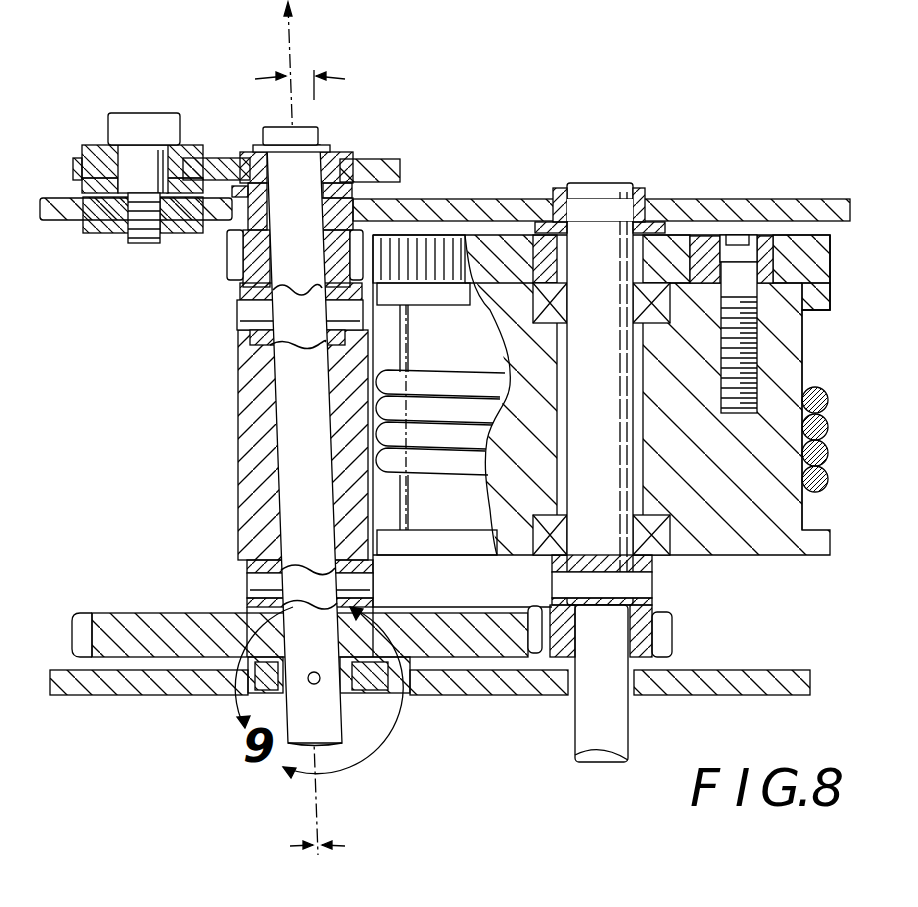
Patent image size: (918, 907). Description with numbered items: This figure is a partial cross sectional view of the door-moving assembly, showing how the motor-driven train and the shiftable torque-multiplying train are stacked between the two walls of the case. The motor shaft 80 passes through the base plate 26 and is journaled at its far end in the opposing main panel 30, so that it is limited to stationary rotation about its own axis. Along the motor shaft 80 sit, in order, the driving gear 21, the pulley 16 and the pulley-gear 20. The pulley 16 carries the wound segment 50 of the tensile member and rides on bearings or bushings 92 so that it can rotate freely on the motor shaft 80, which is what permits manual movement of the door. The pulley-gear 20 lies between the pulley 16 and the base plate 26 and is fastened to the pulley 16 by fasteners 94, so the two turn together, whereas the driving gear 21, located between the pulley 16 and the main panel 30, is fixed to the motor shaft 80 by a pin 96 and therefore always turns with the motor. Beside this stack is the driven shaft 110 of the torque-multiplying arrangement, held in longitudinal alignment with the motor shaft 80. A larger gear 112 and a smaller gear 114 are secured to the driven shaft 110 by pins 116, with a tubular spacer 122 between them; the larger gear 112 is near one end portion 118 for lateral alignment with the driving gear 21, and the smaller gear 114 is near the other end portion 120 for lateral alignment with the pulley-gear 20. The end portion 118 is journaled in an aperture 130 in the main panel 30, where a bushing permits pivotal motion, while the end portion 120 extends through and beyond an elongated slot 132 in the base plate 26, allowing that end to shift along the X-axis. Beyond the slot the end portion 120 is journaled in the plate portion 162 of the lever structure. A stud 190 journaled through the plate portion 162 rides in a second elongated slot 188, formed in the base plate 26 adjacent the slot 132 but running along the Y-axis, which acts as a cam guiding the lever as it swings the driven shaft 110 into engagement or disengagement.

The pulley 16 is at (806, 505).
The pulley-gear 20 is at (830, 243).
The driving gear 21 is at (672, 643).
The base plate 26 is at (742, 200).
The main panel 30 is at (748, 695).
The segment of the tensile member 50 is at (825, 394).
The motor shaft 80 is at (600, 183).
The bearings and/or bushings 92 is at (662, 557).
The fasteners 94 is at (755, 343).
The pin 96 is at (555, 581).
The driven shaft 110 is at (305, 126).
The larger gear 112 is at (76, 614).
The smaller gear 114 is at (233, 257).
The pins 116 is at (240, 302).
The end portion of the driven shaft 118 is at (285, 735).
The other end portion of the driven shaft 120 is at (282, 250).
The tubular spacer 122 is at (245, 430).
The aperture 130 is at (350, 607).
The elongated slot 132 is at (620, 384).
The plate portion 162 is at (400, 170).
The second elongated slot 188 is at (82, 213).
The stud 190 is at (137, 122).